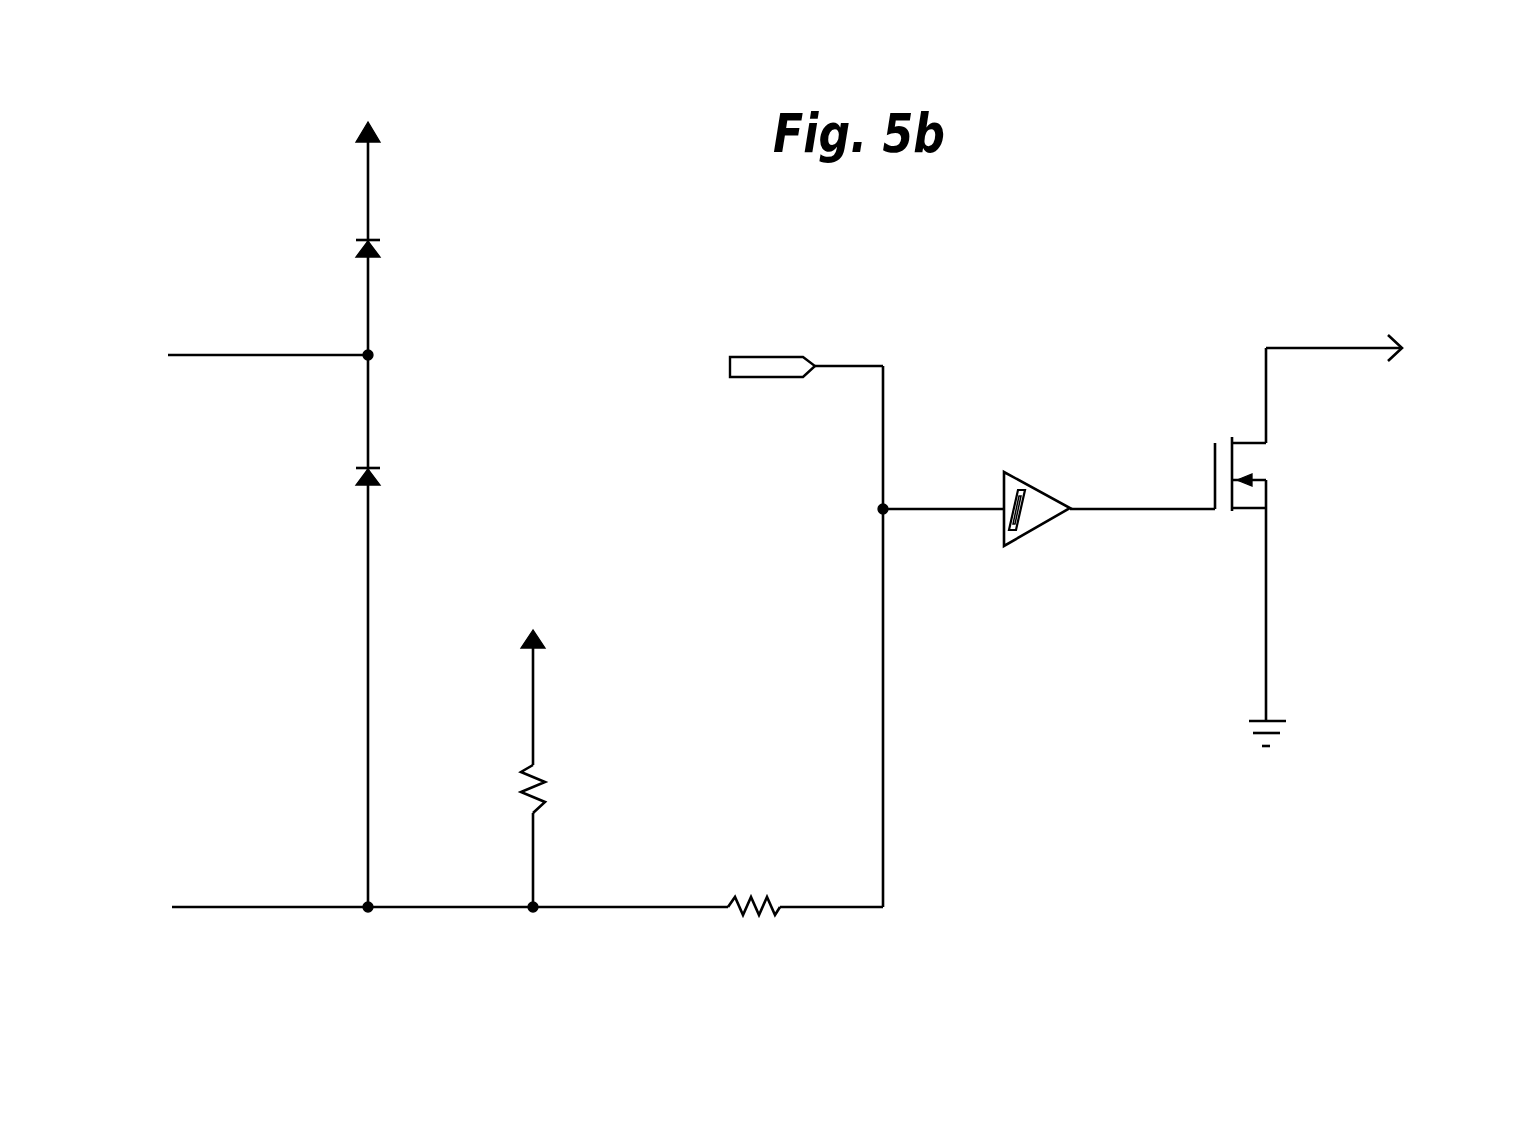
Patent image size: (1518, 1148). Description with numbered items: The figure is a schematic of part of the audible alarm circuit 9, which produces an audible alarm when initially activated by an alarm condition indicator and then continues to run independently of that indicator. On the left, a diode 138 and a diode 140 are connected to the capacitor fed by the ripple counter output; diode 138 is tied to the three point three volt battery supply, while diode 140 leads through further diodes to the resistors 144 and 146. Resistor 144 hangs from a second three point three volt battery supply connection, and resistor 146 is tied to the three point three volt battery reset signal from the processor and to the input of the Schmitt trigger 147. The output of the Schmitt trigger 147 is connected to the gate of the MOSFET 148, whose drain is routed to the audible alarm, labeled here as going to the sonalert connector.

The audible alarm circuit 9 is at (1072, 245).
The diode 138 is at (362, 252).
The diode 140 is at (362, 480).
The resistor 144 is at (537, 762).
The resistor 146 is at (732, 907).
The Schmitt trigger 147 is at (1053, 497).
The MOSFET 148 is at (1267, 493).